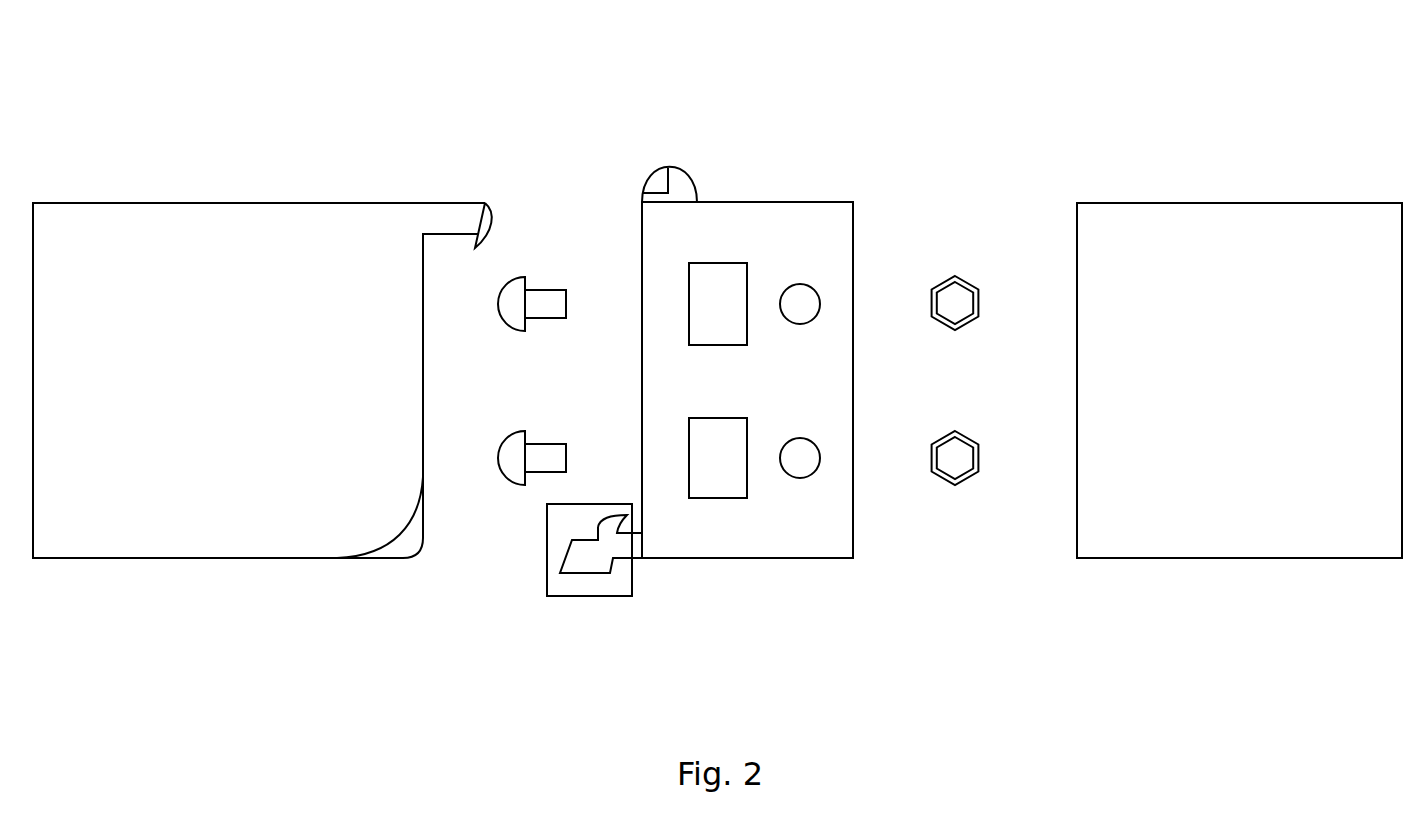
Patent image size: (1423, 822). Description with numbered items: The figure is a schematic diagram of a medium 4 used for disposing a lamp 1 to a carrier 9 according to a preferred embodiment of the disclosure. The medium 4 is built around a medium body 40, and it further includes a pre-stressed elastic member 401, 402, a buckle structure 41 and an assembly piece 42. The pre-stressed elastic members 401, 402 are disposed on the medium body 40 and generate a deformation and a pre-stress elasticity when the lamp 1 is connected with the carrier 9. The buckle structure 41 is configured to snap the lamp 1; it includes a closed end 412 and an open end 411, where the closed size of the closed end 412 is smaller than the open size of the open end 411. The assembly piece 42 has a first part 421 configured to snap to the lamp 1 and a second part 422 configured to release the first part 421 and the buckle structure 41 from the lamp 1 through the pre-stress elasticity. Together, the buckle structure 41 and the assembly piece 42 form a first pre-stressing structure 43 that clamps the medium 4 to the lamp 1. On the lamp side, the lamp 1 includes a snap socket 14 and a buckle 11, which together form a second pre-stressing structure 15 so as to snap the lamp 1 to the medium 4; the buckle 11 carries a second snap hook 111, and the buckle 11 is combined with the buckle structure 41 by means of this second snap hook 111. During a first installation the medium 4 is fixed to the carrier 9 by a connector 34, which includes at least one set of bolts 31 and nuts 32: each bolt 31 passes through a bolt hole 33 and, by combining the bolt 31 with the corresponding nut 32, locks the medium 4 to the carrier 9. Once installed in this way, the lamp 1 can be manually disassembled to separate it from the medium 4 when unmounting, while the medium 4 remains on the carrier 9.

The lamp 1 is at (160, 600).
The buckle 11 is at (440, 217).
The second snap hook 111 is at (483, 205).
The snap socket 14 is at (398, 533).
The second pre-stressing structure 15 is at (232, 150).
The bolt 31 is at (508, 327).
The nut 32 is at (965, 430).
The bolt hole 33 is at (815, 440).
The connector 34 is at (993, 617).
The medium 4 is at (729, 643).
The medium body 40 is at (782, 560).
The pre-stressed elastic member 401 is at (720, 263).
The pre-stressed elastic member 402 is at (720, 498).
The buckle structure 41 is at (725, 88).
The open end 411 is at (648, 167).
The closed end 412 is at (683, 167).
The assembly piece 42 is at (600, 597).
The first part 421 is at (607, 523).
The second part 422 is at (582, 557).
The first pre-stressing structure 43 is at (373, 713).
The carrier 9 is at (1200, 633).